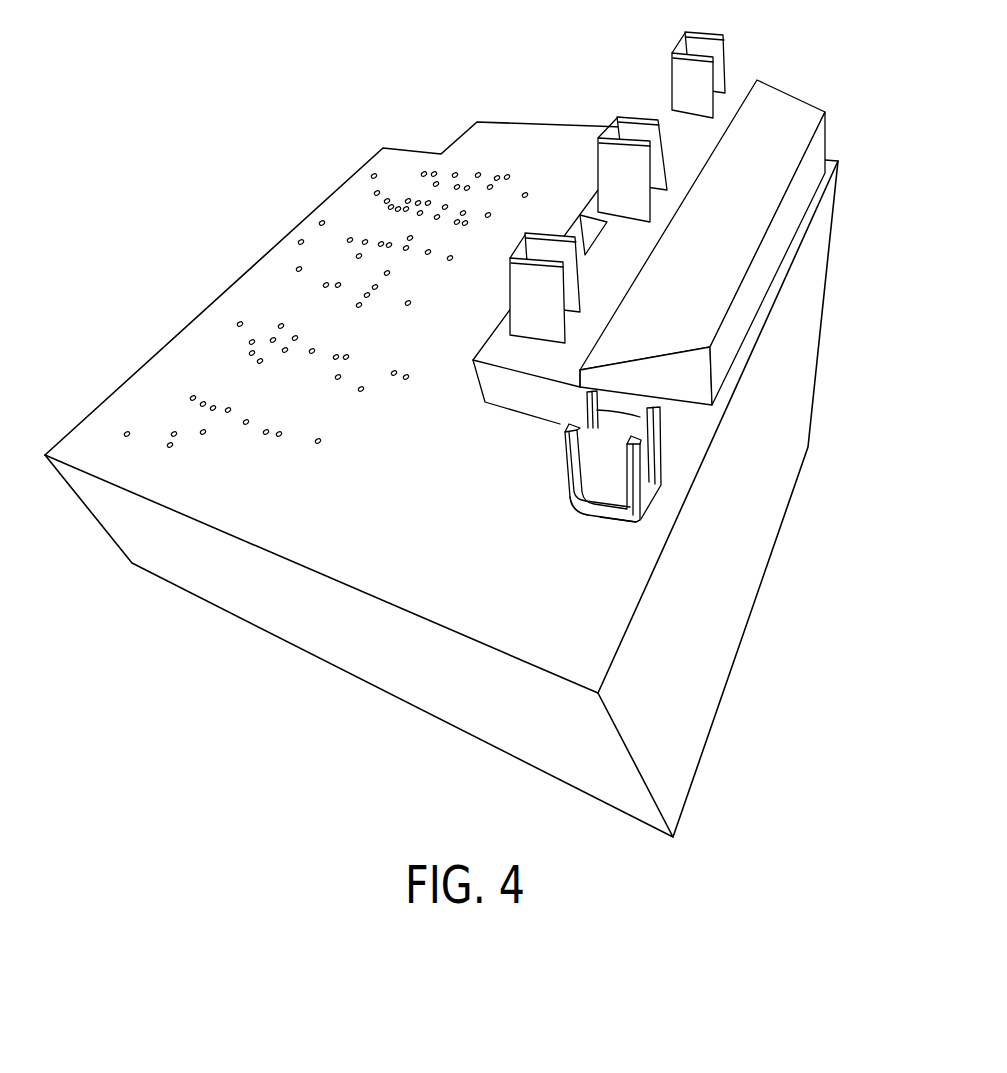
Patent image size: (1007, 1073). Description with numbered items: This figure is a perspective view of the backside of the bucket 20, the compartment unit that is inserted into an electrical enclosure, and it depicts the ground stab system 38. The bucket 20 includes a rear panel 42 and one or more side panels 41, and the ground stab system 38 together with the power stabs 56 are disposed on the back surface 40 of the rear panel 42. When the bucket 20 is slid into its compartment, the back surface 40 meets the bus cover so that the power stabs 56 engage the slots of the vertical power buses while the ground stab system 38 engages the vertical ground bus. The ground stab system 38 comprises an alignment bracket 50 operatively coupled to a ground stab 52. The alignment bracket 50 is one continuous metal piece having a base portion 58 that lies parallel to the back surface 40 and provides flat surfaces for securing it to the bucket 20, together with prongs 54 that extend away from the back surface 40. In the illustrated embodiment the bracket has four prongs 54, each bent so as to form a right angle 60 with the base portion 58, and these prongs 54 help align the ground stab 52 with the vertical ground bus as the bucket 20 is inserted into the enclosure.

The bucket 20 is at (262, 132).
The ground stab system 38 is at (663, 500).
The back surface 40 is at (258, 295).
The side panel 41 is at (185, 560).
The rear panel 42 is at (115, 390).
The alignment bracket 50 is at (560, 482).
The ground stab 52 is at (620, 478).
The prongs 54 is at (597, 408).
The power stabs 56 is at (557, 233).
The base portion 58 is at (637, 527).
The right angle 60 is at (580, 508).